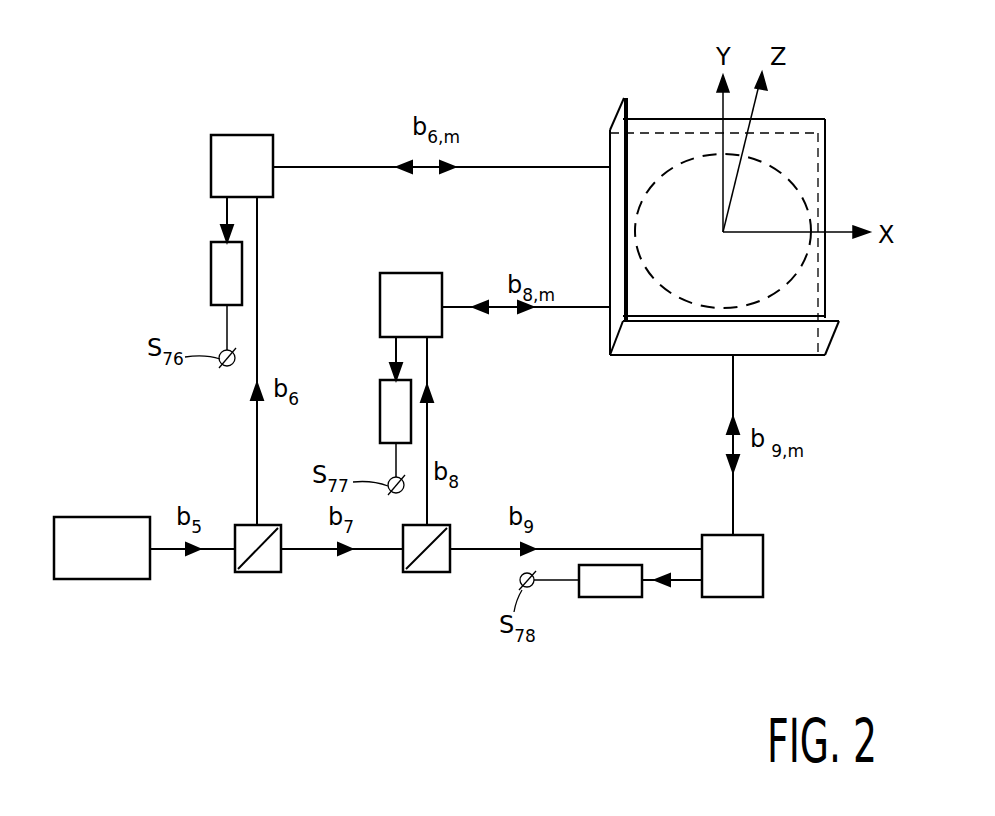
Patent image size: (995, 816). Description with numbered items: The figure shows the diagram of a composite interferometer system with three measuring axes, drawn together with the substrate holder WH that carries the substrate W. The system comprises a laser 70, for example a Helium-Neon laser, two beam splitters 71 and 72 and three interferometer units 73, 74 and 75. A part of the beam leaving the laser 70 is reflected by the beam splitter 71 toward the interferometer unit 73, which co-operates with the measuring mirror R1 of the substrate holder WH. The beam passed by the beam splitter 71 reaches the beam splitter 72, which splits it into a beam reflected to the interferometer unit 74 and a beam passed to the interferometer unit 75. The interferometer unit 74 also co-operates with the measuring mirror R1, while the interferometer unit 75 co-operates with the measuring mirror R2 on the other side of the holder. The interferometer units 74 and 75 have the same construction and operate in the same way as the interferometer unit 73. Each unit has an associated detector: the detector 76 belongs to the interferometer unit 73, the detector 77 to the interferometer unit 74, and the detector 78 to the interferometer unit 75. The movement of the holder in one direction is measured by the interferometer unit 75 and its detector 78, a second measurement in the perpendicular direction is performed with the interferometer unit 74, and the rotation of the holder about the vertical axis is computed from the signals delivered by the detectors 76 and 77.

The laser 70 is at (96, 580).
The beam splitter 71 is at (260, 573).
The beam splitter 72 is at (428, 573).
The interferometer unit 73 is at (211, 169).
The interferometer unit 74 is at (380, 302).
The interferometer unit 75 is at (735, 598).
The detector 76 is at (211, 275).
The detector 77 is at (380, 406).
The detector 78 is at (614, 598).
The substrate holder WH is at (665, 112).
The measuring mirror R1 is at (609, 141).
The measuring mirror R2 is at (662, 345).
The substrate W is at (790, 190).